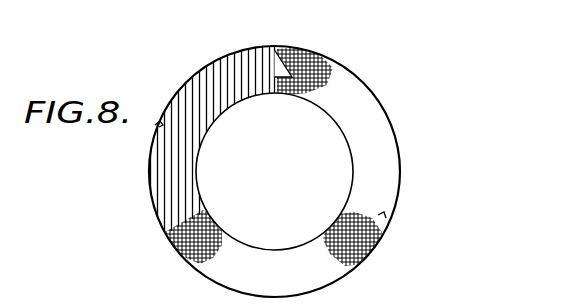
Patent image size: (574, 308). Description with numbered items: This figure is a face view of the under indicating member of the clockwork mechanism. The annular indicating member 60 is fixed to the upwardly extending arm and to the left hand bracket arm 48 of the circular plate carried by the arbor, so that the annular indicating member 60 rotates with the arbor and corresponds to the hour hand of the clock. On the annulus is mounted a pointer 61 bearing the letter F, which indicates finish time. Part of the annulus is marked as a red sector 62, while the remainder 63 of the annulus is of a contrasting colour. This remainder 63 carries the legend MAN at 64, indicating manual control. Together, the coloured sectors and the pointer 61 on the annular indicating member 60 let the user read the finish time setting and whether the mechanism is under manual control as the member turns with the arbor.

The annular indicating member 60 is at (150, 206).
The pointer 61 is at (278, 51).
The red sector 62 is at (216, 68).
The remainder of the annulus 63 is at (345, 262).
The legend MAN 64 is at (220, 266).
The bracket arms 48 is at (154, 128).